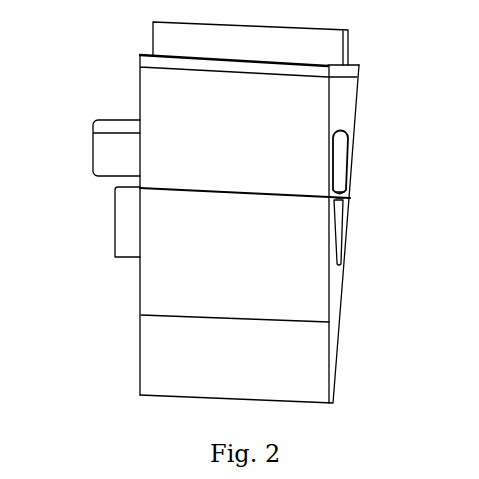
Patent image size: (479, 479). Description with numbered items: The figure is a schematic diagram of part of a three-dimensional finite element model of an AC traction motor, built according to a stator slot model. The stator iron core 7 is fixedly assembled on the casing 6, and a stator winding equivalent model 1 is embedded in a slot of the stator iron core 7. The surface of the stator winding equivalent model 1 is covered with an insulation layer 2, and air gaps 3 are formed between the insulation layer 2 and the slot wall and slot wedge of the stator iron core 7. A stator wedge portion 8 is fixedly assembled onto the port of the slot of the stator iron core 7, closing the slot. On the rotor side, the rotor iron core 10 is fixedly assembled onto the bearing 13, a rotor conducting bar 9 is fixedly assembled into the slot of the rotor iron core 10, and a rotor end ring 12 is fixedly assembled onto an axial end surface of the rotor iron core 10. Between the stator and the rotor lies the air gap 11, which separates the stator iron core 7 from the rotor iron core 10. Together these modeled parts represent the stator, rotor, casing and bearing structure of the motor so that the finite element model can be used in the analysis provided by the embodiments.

The stator winding equivalent model 1 is at (107, 152).
The insulation layer 2 is at (350, 142).
The air gap 3 is at (350, 170).
The casing 6 is at (353, 63).
The stator iron core 7 is at (343, 100).
The stator wedge portion 8 is at (347, 192).
The rotor conducting bar 9 is at (337, 233).
The rotor iron core 10 is at (333, 292).
The air gap between the stator and the rotor 11 is at (143, 188).
The rotor end ring 12 is at (123, 238).
The bearing 13 is at (153, 365).